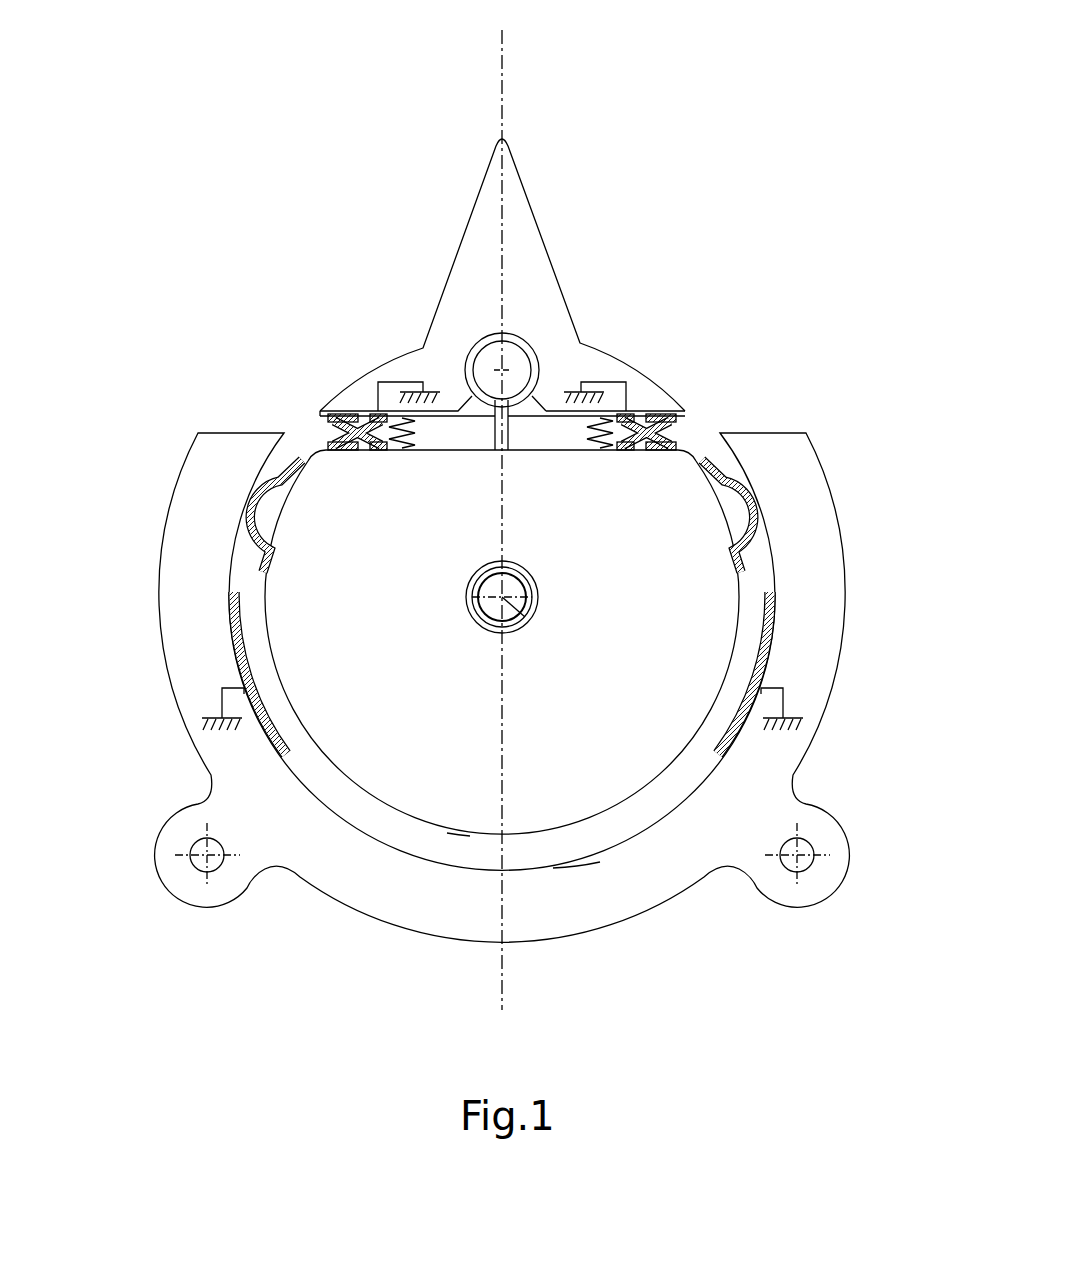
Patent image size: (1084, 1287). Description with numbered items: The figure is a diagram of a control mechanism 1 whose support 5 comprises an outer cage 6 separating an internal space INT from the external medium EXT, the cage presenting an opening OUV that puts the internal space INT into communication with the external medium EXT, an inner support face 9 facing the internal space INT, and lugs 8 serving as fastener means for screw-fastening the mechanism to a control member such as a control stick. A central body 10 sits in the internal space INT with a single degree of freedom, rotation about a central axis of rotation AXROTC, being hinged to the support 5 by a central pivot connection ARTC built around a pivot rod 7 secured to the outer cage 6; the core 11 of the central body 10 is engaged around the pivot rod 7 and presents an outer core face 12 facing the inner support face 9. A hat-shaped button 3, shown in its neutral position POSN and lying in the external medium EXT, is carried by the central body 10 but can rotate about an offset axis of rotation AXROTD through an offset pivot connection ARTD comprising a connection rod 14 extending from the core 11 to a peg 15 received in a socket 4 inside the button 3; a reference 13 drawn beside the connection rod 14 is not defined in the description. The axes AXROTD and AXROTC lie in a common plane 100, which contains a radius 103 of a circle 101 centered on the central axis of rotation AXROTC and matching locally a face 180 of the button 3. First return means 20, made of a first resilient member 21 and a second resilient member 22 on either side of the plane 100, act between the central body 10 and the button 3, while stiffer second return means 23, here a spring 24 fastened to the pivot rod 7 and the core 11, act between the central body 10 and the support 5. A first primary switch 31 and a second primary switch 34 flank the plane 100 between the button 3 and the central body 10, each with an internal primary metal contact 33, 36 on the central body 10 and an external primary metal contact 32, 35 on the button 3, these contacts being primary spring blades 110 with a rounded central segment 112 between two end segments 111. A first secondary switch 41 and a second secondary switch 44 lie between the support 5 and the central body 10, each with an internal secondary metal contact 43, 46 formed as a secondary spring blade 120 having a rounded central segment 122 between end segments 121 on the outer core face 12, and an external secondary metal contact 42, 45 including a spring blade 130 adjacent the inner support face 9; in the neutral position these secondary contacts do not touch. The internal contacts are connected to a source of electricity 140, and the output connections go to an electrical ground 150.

The control mechanism 1 is at (276, 955).
The button 3 is at (572, 256).
The socket 4 is at (492, 338).
The support 5 is at (785, 690).
The outer cage 6 is at (810, 752).
The pivot rod 7 is at (472, 618).
The lugs 8 is at (823, 900).
The inner support face 9 is at (553, 869).
The central body 10 is at (446, 850).
The core 11 is at (502, 642).
The outer core face 12 is at (447, 833).
The stem left flank 13 is at (456, 452).
The connection rod 14 is at (511, 452).
The peg 15 is at (523, 340).
The first return means 20 is at (440, 452).
The first resilient member 21 is at (445, 565).
The second resilient member 22 is at (625, 518).
The second return means 23 is at (528, 570).
The spring 24 is at (642, 592).
The first primary switch 31 is at (348, 478).
The first external primary metal contact 32 is at (340, 417).
The first internal primary metal contact 33 is at (296, 452).
The second primary switch 34 is at (694, 395).
The second external primary metal contact 35 is at (670, 425).
The second internal primary metal contact 36 is at (660, 442).
The first secondary switch 41 is at (212, 642).
The first external secondary metal contact 42 is at (232, 613).
The first internal secondary metal contact 43 is at (199, 516).
The second secondary switch 44 is at (777, 635).
The second external secondary metal contact 45 is at (792, 633).
The second internal secondary metal contact 46 is at (782, 488).
The plane 100 is at (510, 52).
The circle 101 is at (316, 420).
The radius 103 is at (508, 748).
The primary spring blade 110 is at (356, 418).
The end segments 111 is at (327, 410).
The rounded central segment 112 is at (352, 451).
The secondary spring blade 120 is at (255, 491).
The end segments 121 is at (728, 437).
The rounded central segment 122 is at (760, 515).
The spring blade 130 is at (782, 655).
The source of electricity 140 is at (380, 383).
The electrical ground 150 is at (398, 417).
The face of the button 180 is at (643, 410).
The offset pivot connection ARTD is at (517, 325).
The offset axis of rotation AXROTD is at (477, 353).
The central pivot connection ARTC is at (565, 610).
The central axis of rotation AXROTC is at (525, 617).
The neutral position POSN is at (742, 163).
The external medium EXT is at (842, 335).
The internal space INT is at (632, 818).
The opening OUV is at (712, 440).